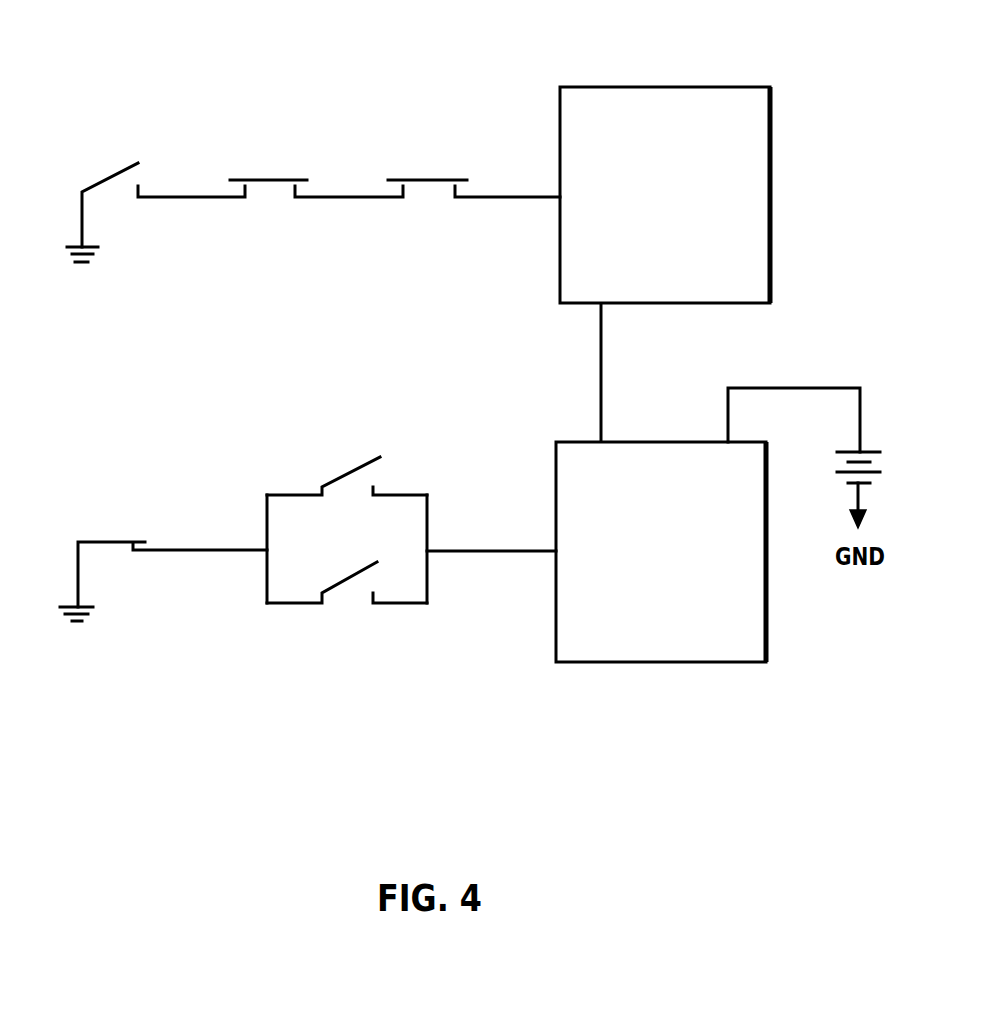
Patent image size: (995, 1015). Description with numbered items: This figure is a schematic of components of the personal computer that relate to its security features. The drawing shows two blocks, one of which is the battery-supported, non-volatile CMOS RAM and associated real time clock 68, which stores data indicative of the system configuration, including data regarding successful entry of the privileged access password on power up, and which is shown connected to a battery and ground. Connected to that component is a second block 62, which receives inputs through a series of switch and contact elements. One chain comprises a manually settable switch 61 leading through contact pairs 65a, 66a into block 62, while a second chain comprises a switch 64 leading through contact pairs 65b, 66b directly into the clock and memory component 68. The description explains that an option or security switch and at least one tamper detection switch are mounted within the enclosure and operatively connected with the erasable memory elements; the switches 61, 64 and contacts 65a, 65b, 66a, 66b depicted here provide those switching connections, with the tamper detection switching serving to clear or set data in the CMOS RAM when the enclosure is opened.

The manual switch 61 is at (103, 177).
The control circuit 62 is at (630, 87).
The switch 64 is at (108, 542).
The relay contact 65a is at (292, 178).
The relay contact 65b is at (357, 468).
The relay contact 66a is at (450, 178).
The relay contact 66b is at (350, 580).
The real time clock 68 is at (573, 440).